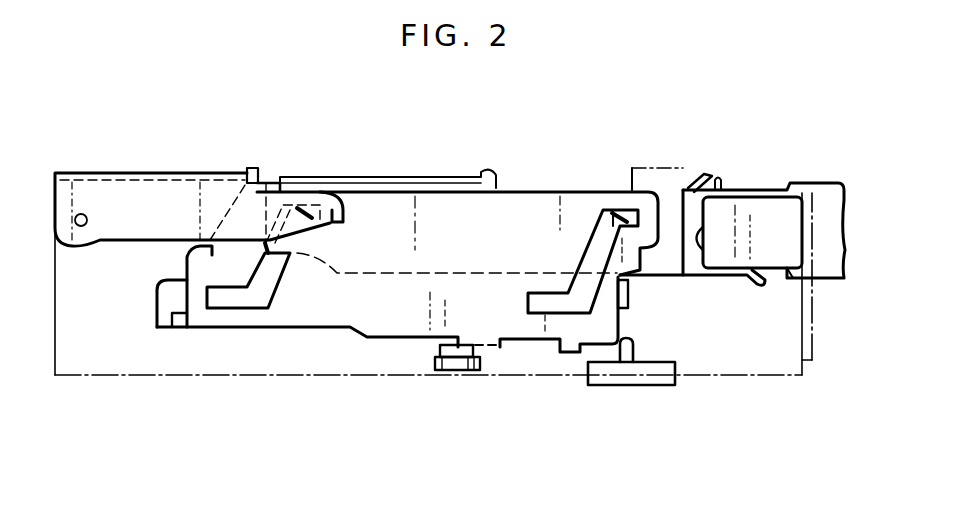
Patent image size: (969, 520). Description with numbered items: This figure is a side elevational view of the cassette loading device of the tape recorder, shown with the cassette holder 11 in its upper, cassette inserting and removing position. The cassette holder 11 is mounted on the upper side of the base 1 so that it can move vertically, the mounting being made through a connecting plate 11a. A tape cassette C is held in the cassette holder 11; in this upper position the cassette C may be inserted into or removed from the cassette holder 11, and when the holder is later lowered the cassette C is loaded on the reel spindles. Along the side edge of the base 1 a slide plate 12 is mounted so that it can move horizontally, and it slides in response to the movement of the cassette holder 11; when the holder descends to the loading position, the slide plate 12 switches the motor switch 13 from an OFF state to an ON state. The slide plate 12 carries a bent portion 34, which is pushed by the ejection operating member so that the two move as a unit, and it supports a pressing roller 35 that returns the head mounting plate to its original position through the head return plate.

The base 1 is at (783, 378).
The cassette holder 11 is at (560, 185).
The connecting plate 11a is at (183, 173).
The slide plate 12 is at (530, 342).
The motor switch 13 is at (635, 386).
The bent portion 34 is at (628, 296).
The pressing roller 35 is at (447, 355).
The tape cassette C is at (845, 250).